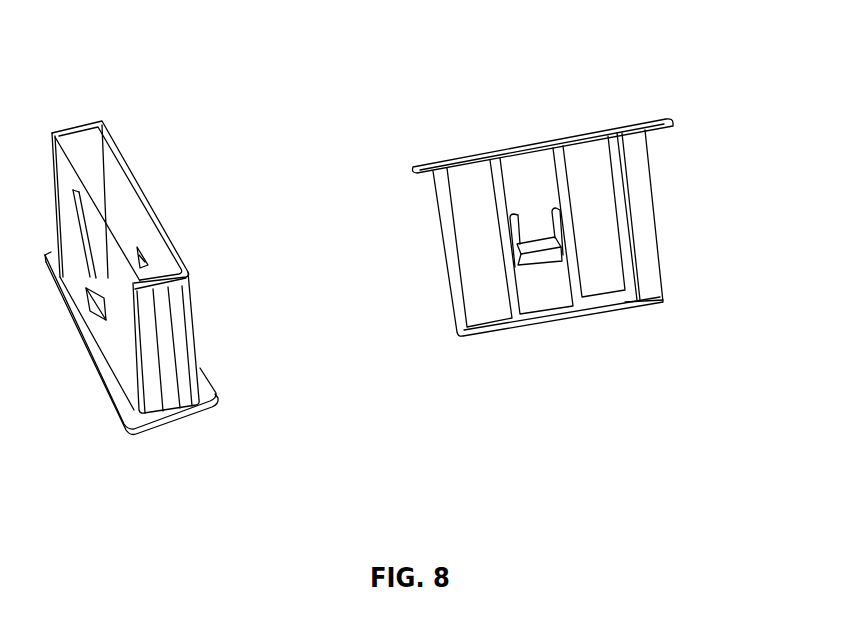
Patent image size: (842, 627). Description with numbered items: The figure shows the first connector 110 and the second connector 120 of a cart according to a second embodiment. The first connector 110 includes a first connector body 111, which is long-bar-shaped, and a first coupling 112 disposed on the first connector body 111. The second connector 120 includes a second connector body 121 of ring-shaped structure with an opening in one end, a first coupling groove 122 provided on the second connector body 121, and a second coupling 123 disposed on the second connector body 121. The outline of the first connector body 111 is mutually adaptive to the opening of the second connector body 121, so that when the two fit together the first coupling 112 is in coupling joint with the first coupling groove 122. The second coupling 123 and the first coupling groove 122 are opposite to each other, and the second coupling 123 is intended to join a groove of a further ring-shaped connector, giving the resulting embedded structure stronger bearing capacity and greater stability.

The first connector 110 is at (587, 133).
The first connector body 111 is at (647, 263).
The first coupling 112 is at (556, 262).
The second connector 120 is at (182, 407).
The second connector body 121 is at (183, 323).
The first coupling groove 122 is at (148, 265).
The second coupling 123 is at (102, 307).